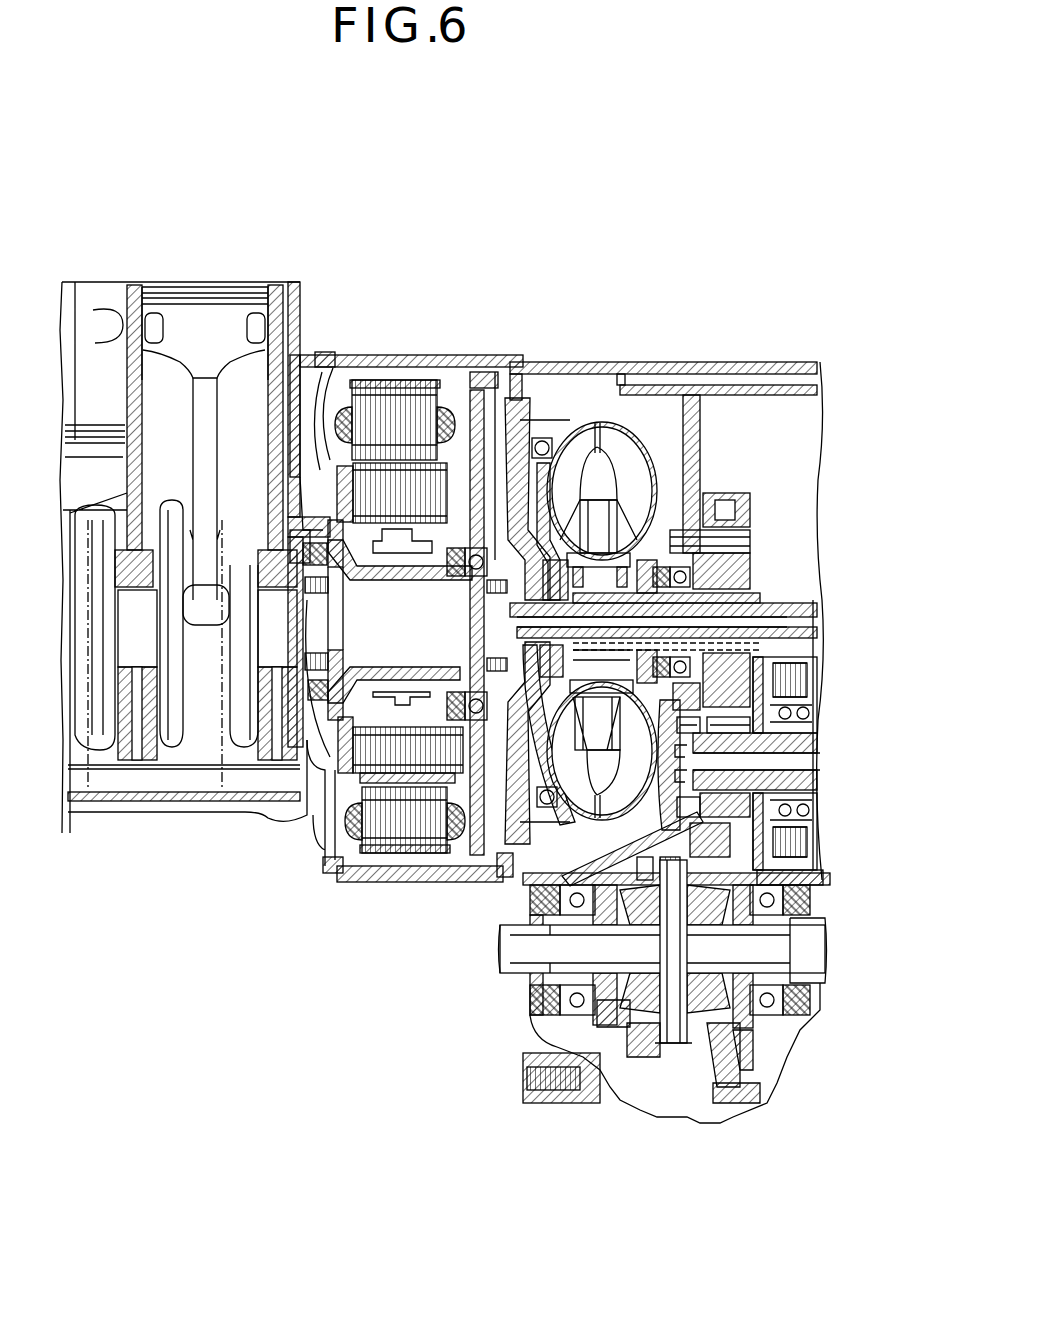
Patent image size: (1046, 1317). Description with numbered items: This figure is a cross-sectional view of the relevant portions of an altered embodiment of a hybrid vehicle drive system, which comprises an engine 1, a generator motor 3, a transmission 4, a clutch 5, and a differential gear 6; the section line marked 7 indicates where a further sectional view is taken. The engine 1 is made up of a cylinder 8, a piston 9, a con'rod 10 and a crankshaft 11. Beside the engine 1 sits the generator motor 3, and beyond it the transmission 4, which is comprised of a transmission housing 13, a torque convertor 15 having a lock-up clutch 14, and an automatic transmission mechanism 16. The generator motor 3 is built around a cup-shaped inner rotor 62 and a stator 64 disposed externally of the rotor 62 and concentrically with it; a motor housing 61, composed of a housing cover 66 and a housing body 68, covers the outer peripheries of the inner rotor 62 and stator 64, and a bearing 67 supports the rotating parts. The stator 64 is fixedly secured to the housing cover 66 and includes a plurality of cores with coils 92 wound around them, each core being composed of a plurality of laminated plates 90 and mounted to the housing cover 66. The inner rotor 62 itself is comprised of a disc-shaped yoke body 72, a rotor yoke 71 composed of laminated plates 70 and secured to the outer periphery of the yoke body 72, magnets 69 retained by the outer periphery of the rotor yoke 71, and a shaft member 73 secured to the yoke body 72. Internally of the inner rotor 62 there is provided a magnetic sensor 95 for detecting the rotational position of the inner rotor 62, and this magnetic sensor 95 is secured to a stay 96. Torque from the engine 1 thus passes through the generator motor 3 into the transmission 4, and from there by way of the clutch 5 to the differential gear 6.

The engine 1 is at (218, 176).
The generator motor 3 is at (423, 184).
The transmission 4 is at (655, 192).
The clutch 5 is at (844, 813).
The differential gear 6 is at (664, 1075).
The section line for FIG. 7 is at (400, 318).
The cylinder 8 is at (132, 390).
The piston 9 is at (130, 328).
The con'rod 10 is at (217, 455).
The crankshaft 11 is at (203, 703).
The transmission housing 13 is at (635, 365).
The lock-up clutch 14 is at (565, 396).
The torque convertor 15 is at (612, 396).
The automatic transmission mechanism 16 is at (717, 505).
The motor housing 61 is at (464, 350).
The inner rotor 62 is at (345, 815).
The stator 64 is at (415, 368).
The housing cover 66 is at (530, 397).
The bearing 67 is at (455, 575).
The housing body 68 is at (355, 365).
The magnets 69 is at (400, 855).
The laminated plates 70 is at (395, 730).
The rotor yoke 71 is at (430, 705).
The yoke body 72 is at (333, 775).
The shaft member 73 is at (362, 672).
The laminated plates 90 is at (457, 853).
The coils 92 is at (405, 382).
The magnetic sensor 95 is at (368, 568).
The stay 96 is at (445, 552).